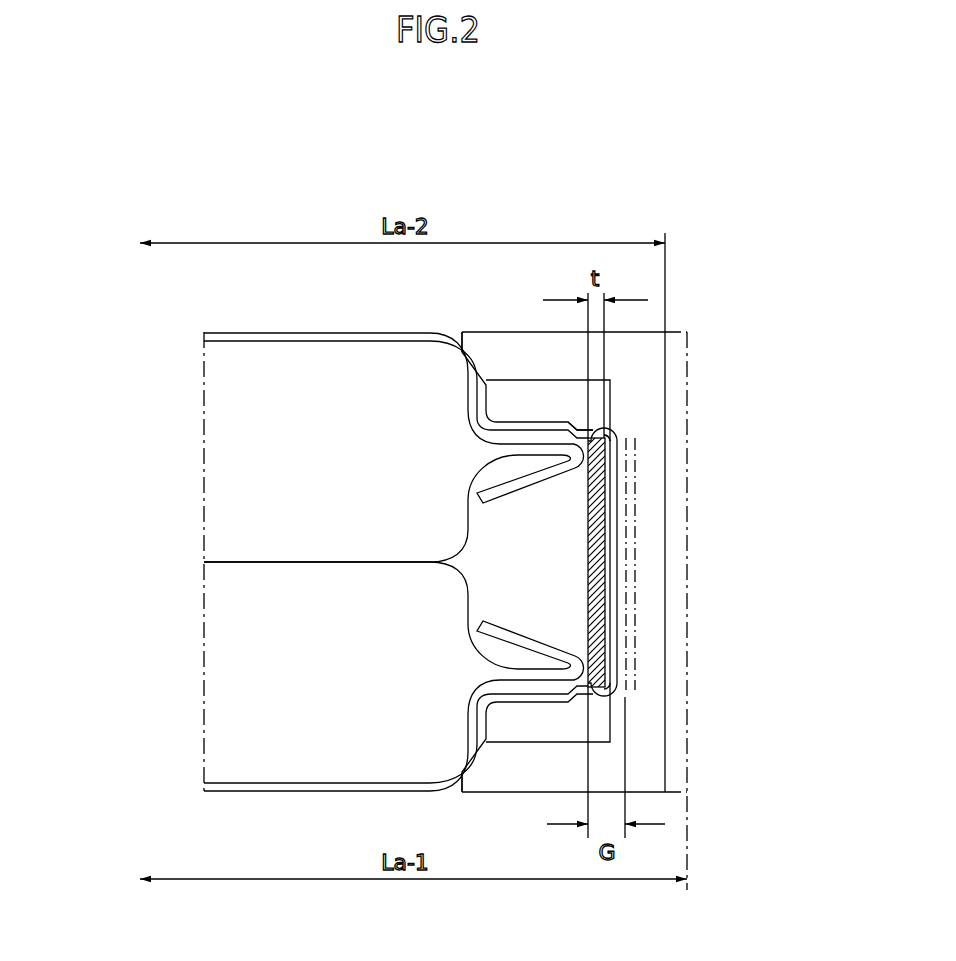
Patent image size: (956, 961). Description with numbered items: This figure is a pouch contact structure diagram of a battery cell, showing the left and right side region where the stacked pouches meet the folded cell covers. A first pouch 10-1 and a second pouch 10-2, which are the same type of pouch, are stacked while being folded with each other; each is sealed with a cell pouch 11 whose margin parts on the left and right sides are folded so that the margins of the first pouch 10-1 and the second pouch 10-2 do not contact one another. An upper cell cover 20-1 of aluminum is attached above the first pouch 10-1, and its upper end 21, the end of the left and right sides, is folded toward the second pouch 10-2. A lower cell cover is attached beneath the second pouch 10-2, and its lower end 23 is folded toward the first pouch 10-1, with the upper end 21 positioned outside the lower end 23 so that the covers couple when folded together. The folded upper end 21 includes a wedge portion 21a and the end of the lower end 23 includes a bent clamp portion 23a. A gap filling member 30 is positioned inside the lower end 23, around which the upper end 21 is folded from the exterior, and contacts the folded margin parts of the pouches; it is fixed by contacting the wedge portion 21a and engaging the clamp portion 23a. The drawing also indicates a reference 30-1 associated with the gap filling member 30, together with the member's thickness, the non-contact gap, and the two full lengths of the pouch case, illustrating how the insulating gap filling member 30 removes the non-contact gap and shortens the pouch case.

The first pouch 10-1 is at (247, 483).
The second pouch 10-2 is at (220, 655).
The cell pouch 11 is at (525, 485).
The upper cell cover 20-1 is at (318, 332).
The upper end 21 is at (635, 562).
The wedge portion 21a is at (583, 432).
The lower end 23 is at (625, 610).
The clamp portion 23a is at (606, 455).
The gap filling member 30 is at (588, 548).
The seal ring reference plane 30-1 is at (667, 380).